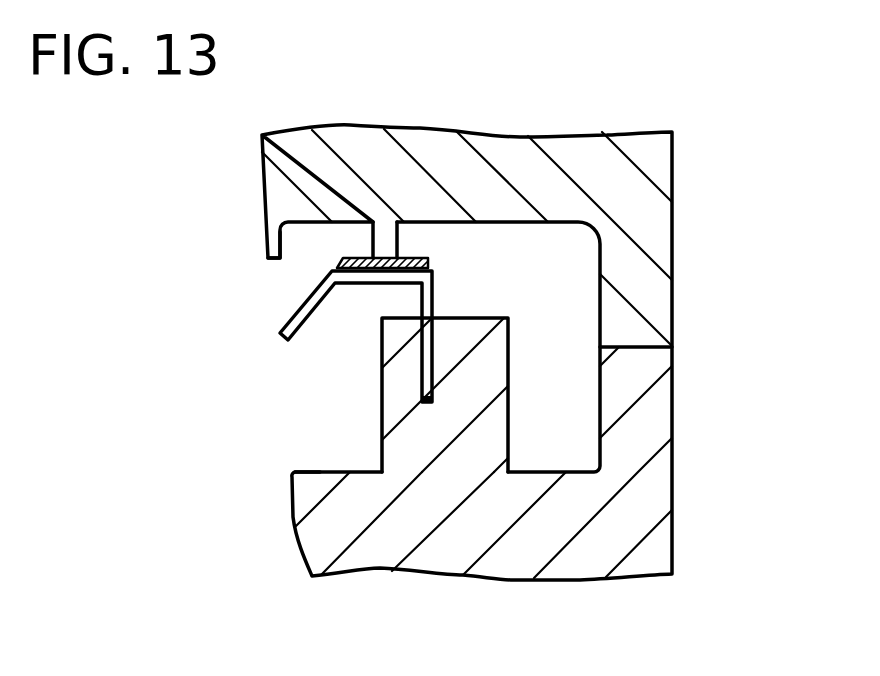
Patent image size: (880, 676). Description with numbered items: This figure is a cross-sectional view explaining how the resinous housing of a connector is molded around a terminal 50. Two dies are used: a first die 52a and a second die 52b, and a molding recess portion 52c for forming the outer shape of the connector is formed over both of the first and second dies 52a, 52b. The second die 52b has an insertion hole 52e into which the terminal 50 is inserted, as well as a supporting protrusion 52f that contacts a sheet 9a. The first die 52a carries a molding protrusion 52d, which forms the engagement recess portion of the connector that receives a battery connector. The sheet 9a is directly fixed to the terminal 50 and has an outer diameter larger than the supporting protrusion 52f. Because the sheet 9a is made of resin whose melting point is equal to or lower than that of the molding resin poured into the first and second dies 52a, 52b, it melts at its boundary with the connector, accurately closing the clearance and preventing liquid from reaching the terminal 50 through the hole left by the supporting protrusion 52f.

The sheet 9a is at (362, 257).
The terminal 50 is at (396, 337).
The first die 52a is at (664, 413).
The second die 52b is at (666, 232).
The molding recess portion 52c is at (280, 259).
The molding protrusion 52d is at (497, 363).
The insertion hole 52e is at (423, 373).
The supporting protrusion 52f is at (385, 241).